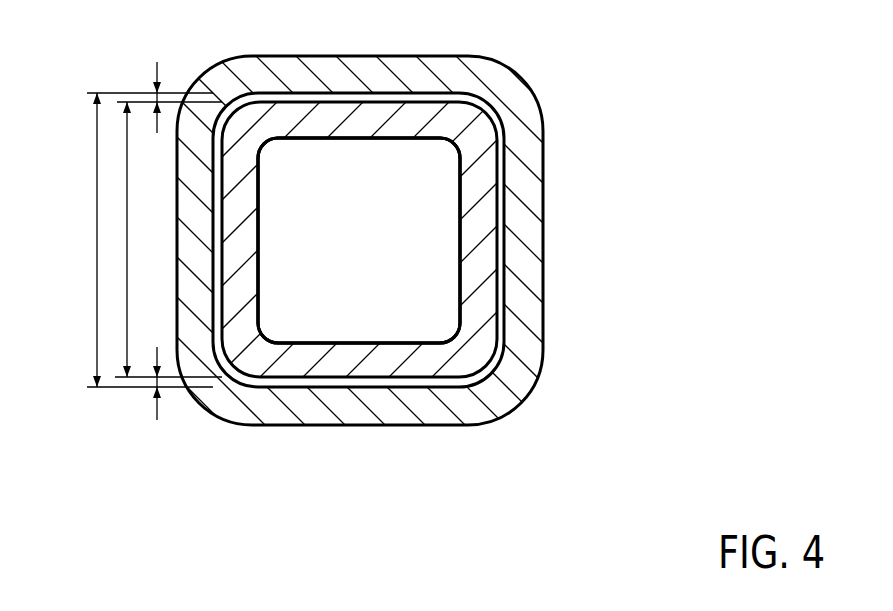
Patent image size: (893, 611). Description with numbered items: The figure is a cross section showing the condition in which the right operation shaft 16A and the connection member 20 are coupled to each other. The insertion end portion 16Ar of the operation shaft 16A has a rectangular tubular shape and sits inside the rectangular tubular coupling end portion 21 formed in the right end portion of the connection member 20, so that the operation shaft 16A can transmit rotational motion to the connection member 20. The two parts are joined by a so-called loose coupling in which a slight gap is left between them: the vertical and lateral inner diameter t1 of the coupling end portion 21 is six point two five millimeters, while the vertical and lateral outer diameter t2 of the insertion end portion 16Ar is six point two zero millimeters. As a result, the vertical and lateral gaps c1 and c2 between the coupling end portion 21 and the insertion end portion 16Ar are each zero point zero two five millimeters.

The connection member 20 is at (504, 100).
The coupling end portion 21 is at (527, 160).
The operation shaft 16A is at (462, 204).
The insertion end portion 16Ar is at (472, 248).
The inner diameter of coupling end portion t1 is at (97, 200).
The outer diameter of insertion end portion t2 is at (127, 253).
The vertical gap c1 is at (157, 82).
The lateral gap c2 is at (155, 407).